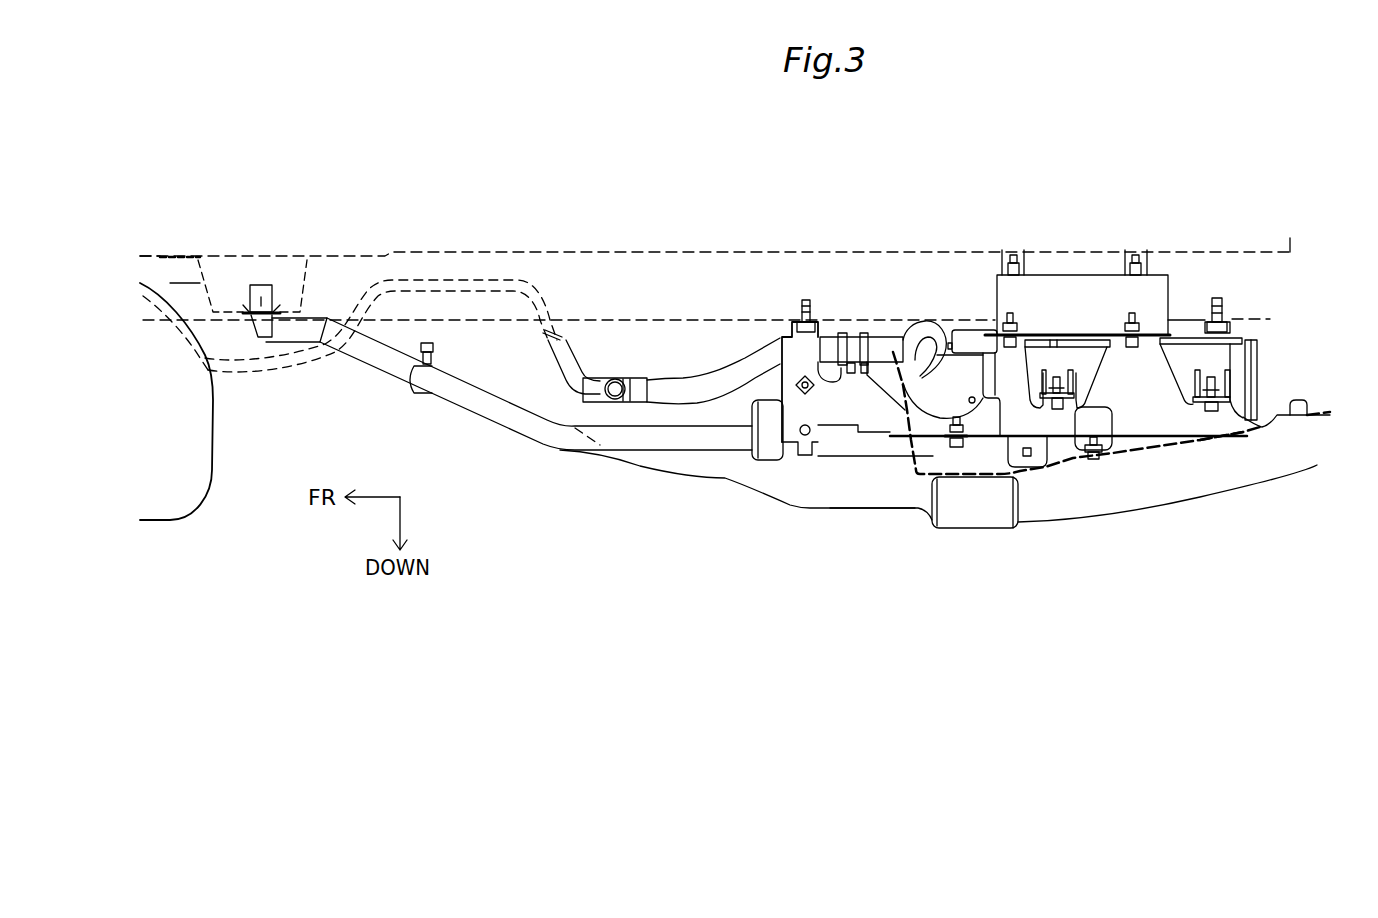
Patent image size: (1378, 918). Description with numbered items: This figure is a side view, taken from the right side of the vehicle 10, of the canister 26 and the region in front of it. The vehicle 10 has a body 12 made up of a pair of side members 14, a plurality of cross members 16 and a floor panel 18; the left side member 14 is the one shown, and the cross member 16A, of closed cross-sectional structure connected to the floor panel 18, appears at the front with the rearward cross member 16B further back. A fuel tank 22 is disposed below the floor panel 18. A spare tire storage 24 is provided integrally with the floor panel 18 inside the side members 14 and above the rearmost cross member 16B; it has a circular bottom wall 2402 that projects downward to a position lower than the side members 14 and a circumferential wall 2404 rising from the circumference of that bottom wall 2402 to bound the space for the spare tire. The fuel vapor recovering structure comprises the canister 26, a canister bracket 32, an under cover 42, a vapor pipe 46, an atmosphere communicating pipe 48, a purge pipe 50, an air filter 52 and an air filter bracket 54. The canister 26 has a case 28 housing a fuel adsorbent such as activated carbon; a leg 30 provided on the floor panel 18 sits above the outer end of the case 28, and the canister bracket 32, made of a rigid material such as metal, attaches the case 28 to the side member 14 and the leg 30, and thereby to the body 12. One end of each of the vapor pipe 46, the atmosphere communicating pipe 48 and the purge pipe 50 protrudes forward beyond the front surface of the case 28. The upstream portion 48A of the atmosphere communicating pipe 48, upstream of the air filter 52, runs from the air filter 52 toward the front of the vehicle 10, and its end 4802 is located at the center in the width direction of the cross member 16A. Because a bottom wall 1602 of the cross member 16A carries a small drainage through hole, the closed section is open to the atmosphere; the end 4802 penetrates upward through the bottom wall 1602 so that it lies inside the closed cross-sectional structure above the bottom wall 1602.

The vehicle 10 is at (316, 193).
The body 12 is at (487, 197).
The side member 14 is at (672, 322).
The cross member 16 is at (1000, 530).
The cross member 16A is at (200, 283).
The cross member 16B is at (1111, 463).
The bottom wall 1602 is at (228, 308).
The floor panel 18 is at (697, 255).
The fuel tank 22 is at (162, 522).
The spare tire storage 24 is at (805, 508).
The bottom wall 2402 is at (875, 508).
The circumferential wall 2404 is at (505, 370).
The canister 26 is at (1157, 320).
The case 28 is at (1183, 357).
The leg 30 is at (1023, 267).
The canister bracket 32 is at (1167, 450).
The under cover 42 is at (1137, 455).
The vapor pipe 46 is at (892, 353).
The atmosphere communicating pipe 48 is at (887, 440).
The upstream portion 48A is at (370, 367).
The end 4802 is at (262, 284).
The purge pipe 50 is at (912, 345).
The air filter 52 is at (772, 463).
The air filter bracket 54 is at (847, 410).